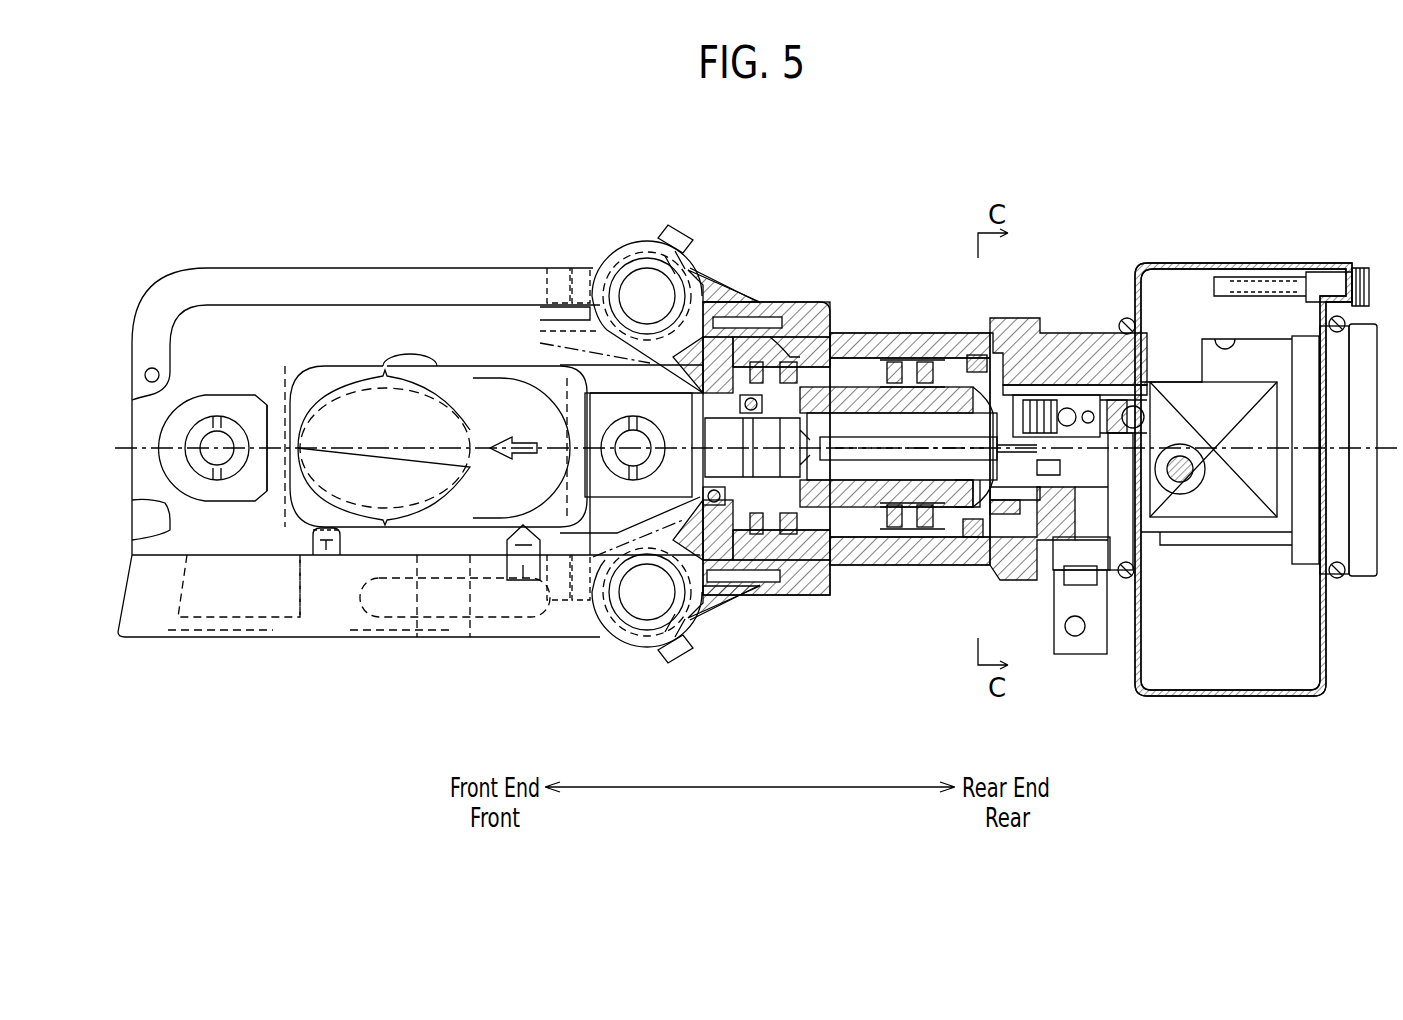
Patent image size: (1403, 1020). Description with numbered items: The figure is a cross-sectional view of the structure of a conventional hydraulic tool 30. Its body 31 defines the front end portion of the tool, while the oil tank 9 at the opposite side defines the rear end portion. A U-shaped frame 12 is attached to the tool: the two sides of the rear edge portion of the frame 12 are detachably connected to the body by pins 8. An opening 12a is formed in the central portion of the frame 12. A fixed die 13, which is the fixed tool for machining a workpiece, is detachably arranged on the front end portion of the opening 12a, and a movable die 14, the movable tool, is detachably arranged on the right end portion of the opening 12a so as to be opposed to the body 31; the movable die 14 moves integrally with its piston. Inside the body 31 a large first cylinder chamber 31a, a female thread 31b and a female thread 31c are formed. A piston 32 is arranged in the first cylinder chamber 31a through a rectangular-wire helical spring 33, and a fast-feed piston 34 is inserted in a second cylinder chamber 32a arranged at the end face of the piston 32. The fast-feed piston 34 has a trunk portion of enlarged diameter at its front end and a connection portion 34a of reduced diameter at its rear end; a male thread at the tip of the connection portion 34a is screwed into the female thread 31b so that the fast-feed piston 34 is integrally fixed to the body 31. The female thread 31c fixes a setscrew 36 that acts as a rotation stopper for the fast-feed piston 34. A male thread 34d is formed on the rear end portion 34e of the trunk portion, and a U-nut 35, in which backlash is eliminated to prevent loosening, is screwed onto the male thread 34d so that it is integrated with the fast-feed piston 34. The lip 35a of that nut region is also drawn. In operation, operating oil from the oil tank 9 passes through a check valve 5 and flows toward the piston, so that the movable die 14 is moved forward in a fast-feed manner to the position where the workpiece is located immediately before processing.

The check valve 5 is at (1133, 404).
The pins 8 is at (657, 300).
The oil tank 9 is at (1175, 302).
The frame 12 is at (195, 288).
The opening 12a is at (357, 410).
The fixed die 13 is at (295, 385).
The movable die 14 is at (540, 375).
The hydraulic tool 30 is at (1180, 143).
The body 31 is at (1085, 325).
The first cylinder chamber 31a is at (787, 357).
The female thread 31b is at (1060, 448).
The female thread 31c is at (1015, 530).
The piston 32 is at (897, 478).
The second cylinder chamber 32a is at (938, 400).
The rectangular-wire helical spring 33 is at (930, 395).
The fast-feed piston 34 is at (881, 333).
The connection portion 34a is at (1090, 480).
The male thread 34d is at (894, 500).
The rear end portion 34e is at (1047, 365).
The U-nut 35 is at (992, 378).
The flange lip 35a is at (973, 510).
The setscrew 36 is at (1005, 520).